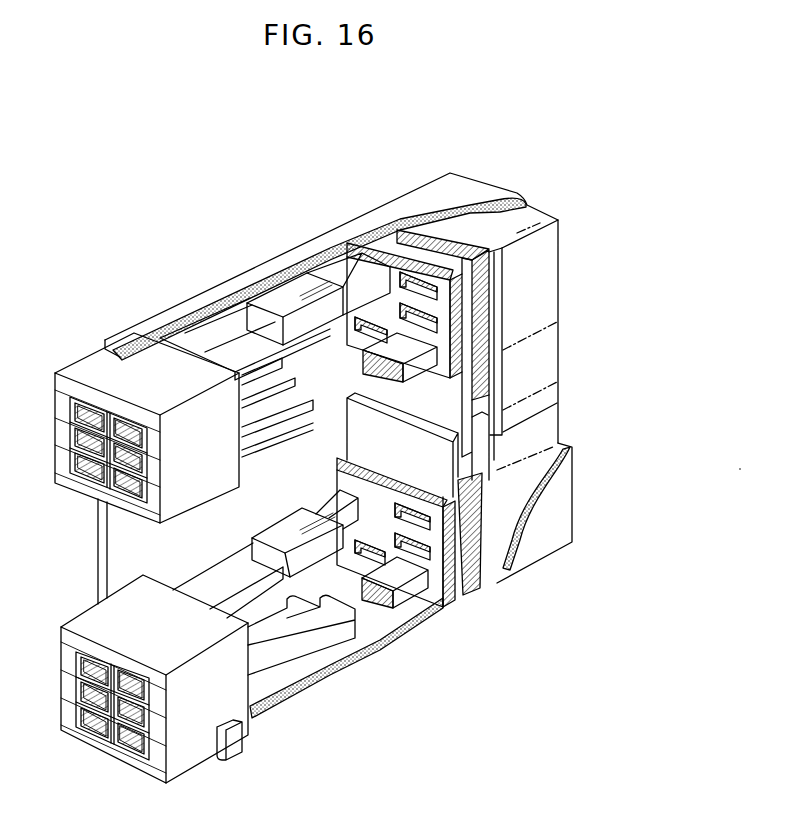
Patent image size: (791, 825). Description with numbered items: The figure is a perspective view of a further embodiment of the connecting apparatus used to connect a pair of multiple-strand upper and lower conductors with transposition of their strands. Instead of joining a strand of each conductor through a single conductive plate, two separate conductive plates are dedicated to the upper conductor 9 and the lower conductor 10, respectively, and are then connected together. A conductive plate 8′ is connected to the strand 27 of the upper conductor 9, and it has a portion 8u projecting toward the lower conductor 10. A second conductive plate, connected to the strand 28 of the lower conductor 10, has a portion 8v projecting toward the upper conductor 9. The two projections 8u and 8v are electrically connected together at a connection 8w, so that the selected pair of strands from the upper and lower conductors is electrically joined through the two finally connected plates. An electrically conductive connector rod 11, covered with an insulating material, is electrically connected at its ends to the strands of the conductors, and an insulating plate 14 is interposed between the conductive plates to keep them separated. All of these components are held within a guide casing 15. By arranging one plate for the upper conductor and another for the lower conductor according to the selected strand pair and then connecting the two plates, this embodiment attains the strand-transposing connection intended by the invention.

The guide casing 15 is at (365, 217).
The connector rod 11 is at (348, 270).
The strand of the upper conductor 27 is at (220, 337).
The upper conductor 9 is at (93, 363).
The strand of the lower conductor 28 is at (215, 578).
The lower conductor 10 is at (107, 618).
The conductive plate 8′ is at (465, 306).
The projecting portion 8u is at (447, 397).
The connection 8w is at (463, 441).
The projecting portion 8v is at (430, 467).
The insulating plate 14 is at (493, 577).